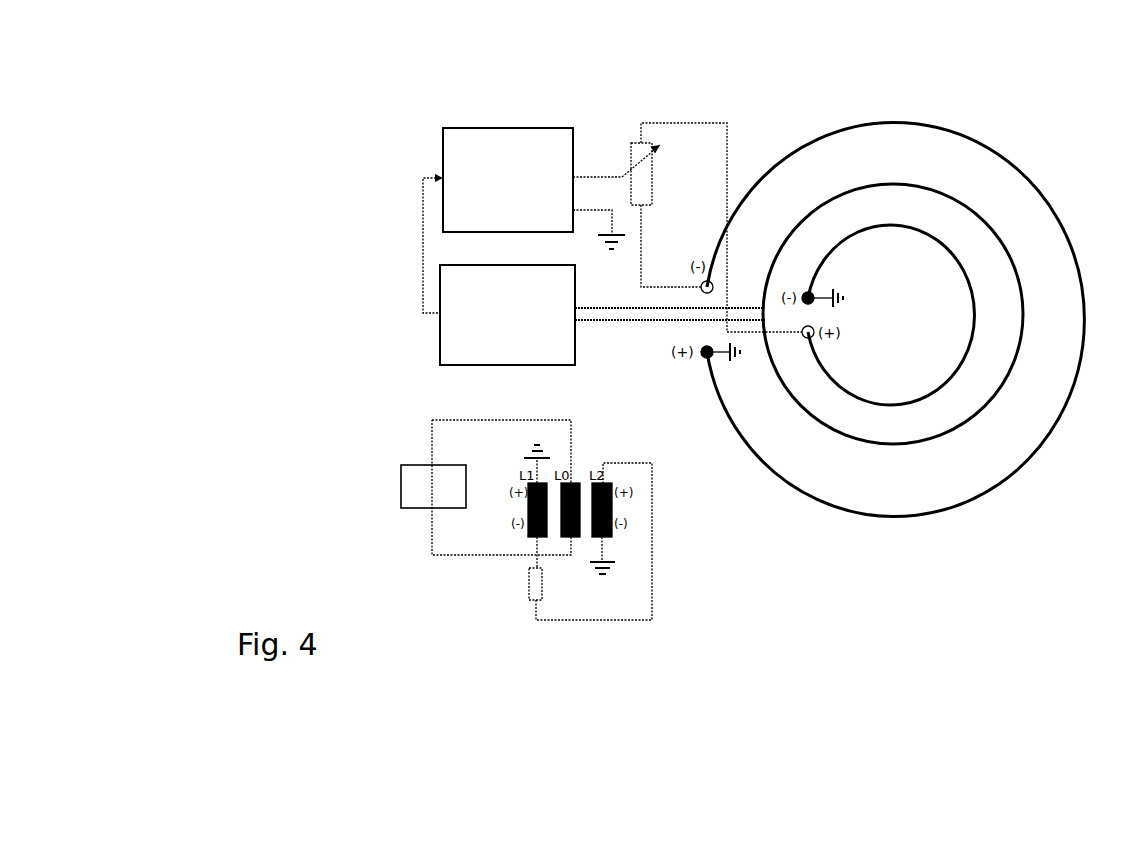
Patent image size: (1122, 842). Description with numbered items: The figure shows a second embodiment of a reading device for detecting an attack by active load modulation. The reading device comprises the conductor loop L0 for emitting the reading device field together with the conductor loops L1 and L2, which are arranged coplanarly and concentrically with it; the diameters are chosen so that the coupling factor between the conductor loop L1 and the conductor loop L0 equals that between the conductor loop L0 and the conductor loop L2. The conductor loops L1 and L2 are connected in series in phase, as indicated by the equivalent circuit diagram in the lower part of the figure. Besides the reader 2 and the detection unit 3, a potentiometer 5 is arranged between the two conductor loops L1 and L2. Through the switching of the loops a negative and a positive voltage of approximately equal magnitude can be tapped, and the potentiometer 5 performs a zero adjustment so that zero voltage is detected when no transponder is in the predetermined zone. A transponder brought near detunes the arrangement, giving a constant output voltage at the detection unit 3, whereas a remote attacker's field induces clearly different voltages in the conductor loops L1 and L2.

The reader 2 is at (452, 365).
The detection unit 3 is at (485, 128).
The potentiometer 5 is at (632, 143).
The conductor loop L1 is at (845, 122).
The conductor loop L0 is at (930, 185).
The conductor loop L2 is at (970, 267).